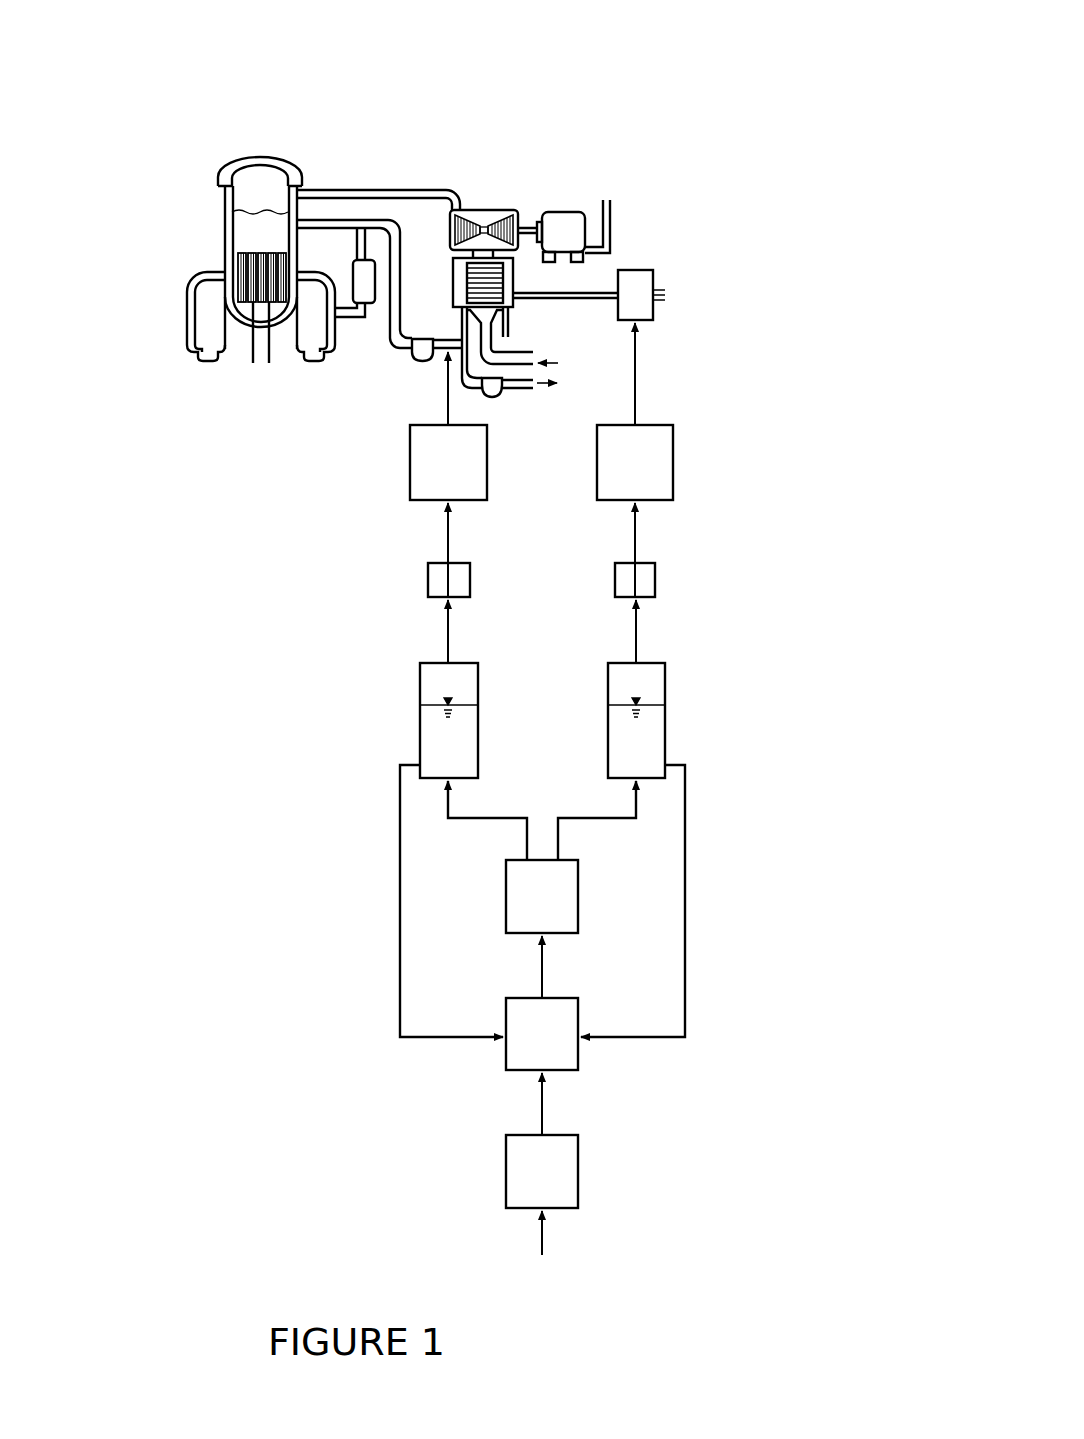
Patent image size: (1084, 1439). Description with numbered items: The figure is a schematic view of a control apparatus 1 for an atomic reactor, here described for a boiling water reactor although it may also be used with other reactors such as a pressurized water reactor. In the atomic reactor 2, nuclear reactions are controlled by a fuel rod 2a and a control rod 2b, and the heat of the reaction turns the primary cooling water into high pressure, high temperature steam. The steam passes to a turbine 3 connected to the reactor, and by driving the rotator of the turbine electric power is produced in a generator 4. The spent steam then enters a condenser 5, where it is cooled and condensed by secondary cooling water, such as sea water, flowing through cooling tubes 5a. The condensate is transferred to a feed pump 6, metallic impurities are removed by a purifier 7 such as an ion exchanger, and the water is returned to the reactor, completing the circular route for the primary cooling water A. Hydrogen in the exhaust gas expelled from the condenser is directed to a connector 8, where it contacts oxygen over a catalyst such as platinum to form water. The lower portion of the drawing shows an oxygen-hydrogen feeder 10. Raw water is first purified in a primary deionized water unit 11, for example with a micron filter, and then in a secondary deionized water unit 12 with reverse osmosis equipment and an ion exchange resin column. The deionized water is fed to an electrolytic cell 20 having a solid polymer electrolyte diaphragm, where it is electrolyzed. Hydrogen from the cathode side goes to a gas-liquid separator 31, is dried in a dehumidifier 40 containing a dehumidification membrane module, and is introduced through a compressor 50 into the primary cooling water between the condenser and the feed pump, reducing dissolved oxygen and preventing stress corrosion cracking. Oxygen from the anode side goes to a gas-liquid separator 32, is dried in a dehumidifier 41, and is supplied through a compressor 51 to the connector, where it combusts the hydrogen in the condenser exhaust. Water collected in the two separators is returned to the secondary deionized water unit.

The control apparatus 1 is at (221, 603).
The atomic reactor 2 is at (240, 161).
The fuel rod 2a is at (237, 265).
The control rod 2b is at (248, 347).
The circular route for primary cooling water A is at (413, 192).
The turbine 3 is at (478, 212).
The generator 4 is at (563, 228).
The condenser 5 is at (515, 273).
The cooling tubes 5a is at (508, 335).
The feed pump 6 is at (430, 358).
The purifier 7 is at (365, 277).
The connector 8 is at (656, 286).
The oxygen-hydrogen feeder 10 is at (304, 870).
The primary deionized water unit 11 is at (562, 1175).
The secondary deionized water unit 12 is at (556, 1046).
The electrolytic cell 20 is at (563, 900).
The gas-liquid separator 31 is at (418, 743).
The gas-liquid separator 32 is at (735, 795).
The dehumidifier 40 is at (428, 587).
The dehumidifier 41 is at (655, 587).
The compressor 50 is at (410, 478).
The compressor 51 is at (673, 478).